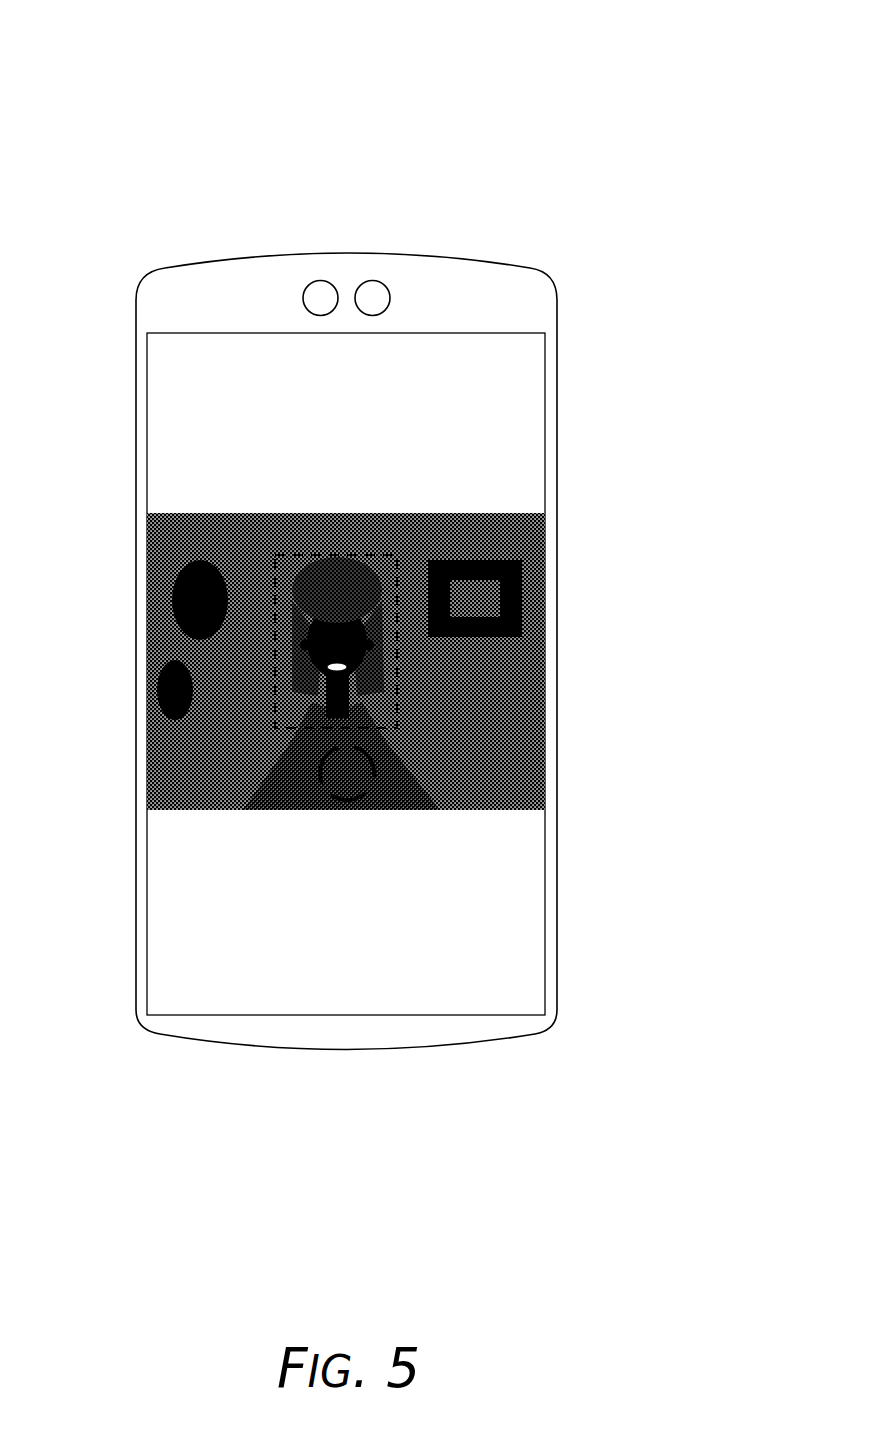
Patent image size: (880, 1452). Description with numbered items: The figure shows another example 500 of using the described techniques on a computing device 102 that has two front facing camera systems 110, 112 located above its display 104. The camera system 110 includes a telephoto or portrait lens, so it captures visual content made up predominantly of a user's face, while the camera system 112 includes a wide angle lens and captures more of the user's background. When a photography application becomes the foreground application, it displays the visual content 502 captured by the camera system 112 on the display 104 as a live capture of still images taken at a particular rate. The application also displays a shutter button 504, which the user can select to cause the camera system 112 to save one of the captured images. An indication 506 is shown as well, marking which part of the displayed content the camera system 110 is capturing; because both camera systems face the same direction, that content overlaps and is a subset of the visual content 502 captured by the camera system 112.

The example 500 is at (698, 70).
The computing device 102 is at (140, 292).
The display 104 is at (553, 524).
The camera system 110 is at (320, 280).
The camera system 112 is at (373, 280).
The visual content 502 is at (148, 515).
The shutter button 504 is at (373, 772).
The indication 506 is at (397, 687).